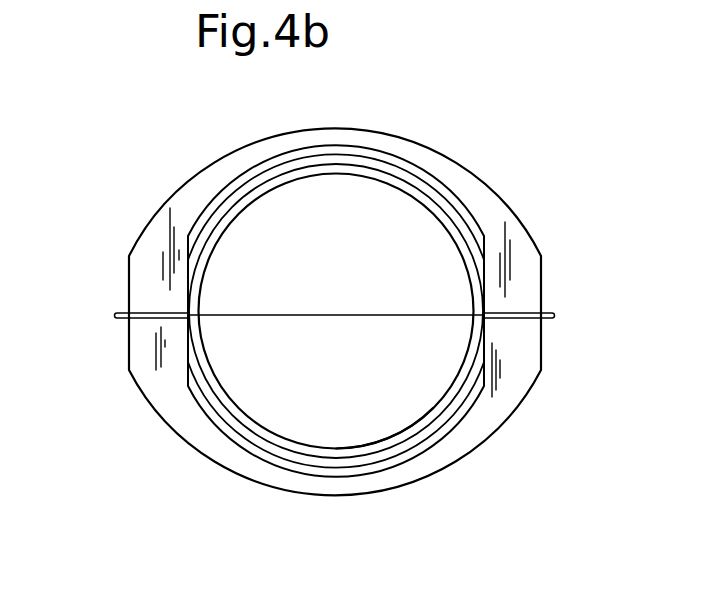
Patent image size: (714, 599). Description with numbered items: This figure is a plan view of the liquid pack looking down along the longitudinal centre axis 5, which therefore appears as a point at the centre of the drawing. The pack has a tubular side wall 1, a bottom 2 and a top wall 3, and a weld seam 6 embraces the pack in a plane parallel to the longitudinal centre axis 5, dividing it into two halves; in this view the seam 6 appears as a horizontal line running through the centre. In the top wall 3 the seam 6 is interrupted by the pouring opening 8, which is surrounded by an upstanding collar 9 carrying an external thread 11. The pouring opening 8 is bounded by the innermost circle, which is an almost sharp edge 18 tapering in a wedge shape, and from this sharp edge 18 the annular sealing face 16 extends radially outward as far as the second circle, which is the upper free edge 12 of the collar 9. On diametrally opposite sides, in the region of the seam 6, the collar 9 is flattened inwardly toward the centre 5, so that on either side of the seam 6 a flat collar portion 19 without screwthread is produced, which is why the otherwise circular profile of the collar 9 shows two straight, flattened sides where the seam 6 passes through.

The side wall 1 is at (467, 168).
The bottom 2 is at (418, 9).
The top wall 3 is at (187, 406).
The longitudinal centre axis 5 is at (336, 315).
The seam 6 is at (153, 318).
The pouring opening 8 is at (408, 385).
The collar 9 is at (371, 160).
The external thread 11 is at (242, 182).
The outer free edge 12 is at (398, 177).
The sealing face 16 is at (390, 442).
The sharp edge 18 is at (225, 228).
The flat collar portion 19 is at (487, 285).